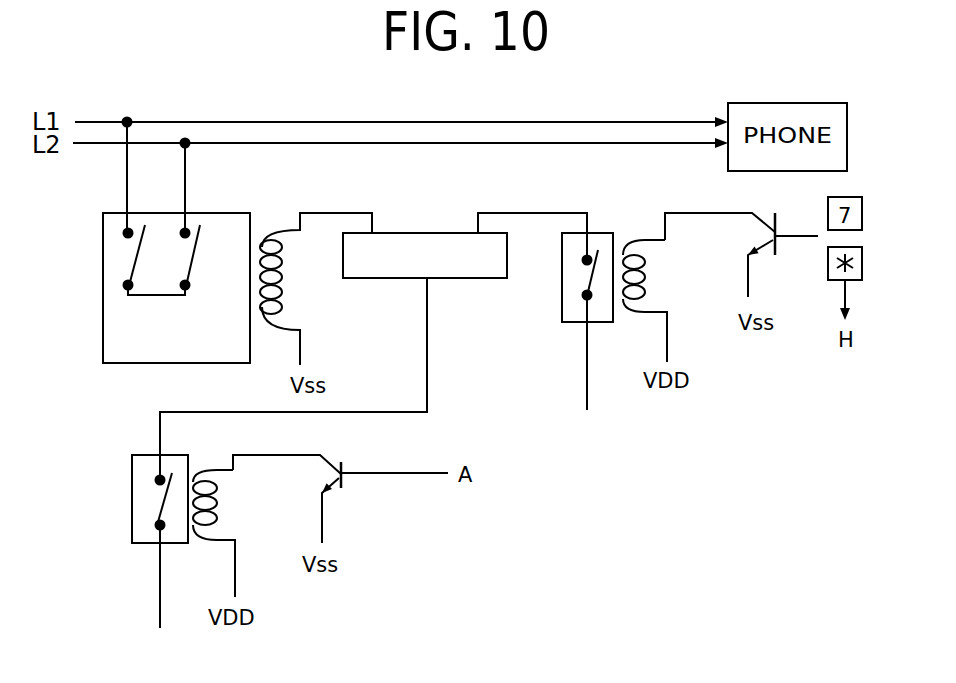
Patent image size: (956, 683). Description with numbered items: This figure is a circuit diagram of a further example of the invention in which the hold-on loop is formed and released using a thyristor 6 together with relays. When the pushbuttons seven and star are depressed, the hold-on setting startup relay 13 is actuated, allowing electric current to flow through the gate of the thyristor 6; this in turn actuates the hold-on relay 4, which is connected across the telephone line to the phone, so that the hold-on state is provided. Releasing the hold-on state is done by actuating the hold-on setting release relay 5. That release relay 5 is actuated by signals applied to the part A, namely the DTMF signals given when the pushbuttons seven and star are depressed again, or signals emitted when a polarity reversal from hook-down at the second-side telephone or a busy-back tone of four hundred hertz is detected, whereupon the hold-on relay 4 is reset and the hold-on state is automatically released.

The hold-on relay 4 is at (115, 342).
The hold-on setting release relay 5 is at (145, 507).
The thyristor 6 is at (452, 248).
The hold-on setting startup relay 13 is at (572, 305).